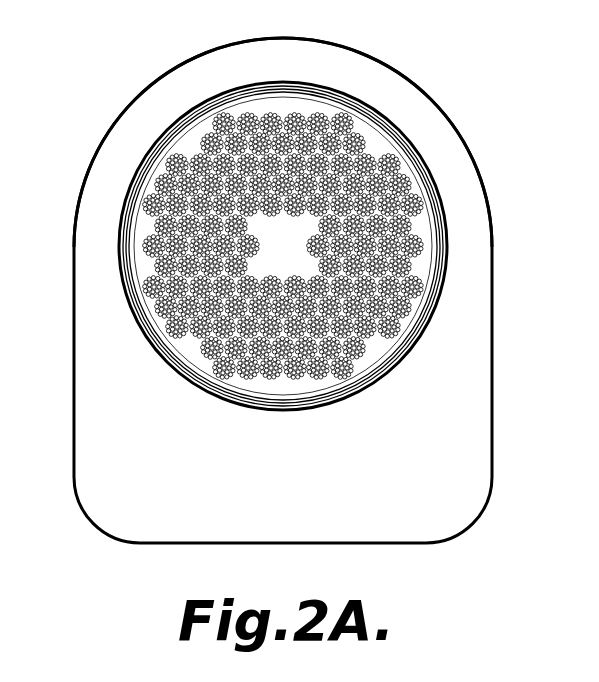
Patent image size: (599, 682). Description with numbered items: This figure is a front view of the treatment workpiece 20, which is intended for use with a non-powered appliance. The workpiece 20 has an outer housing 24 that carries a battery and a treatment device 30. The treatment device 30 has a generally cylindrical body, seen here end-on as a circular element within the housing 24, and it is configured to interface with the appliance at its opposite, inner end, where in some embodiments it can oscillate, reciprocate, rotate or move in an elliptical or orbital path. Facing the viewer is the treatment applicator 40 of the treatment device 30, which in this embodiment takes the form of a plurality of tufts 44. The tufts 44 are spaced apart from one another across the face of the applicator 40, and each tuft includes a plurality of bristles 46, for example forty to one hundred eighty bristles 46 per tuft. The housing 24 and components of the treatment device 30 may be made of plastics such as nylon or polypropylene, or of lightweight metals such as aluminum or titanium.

The treatment workpiece 20 is at (86, 77).
The outer housing 24 is at (450, 118).
The treatment device 30 is at (118, 224).
The treatment applicator 40 is at (245, 96).
The tufts 44 is at (420, 203).
The bristles 46 is at (423, 222).